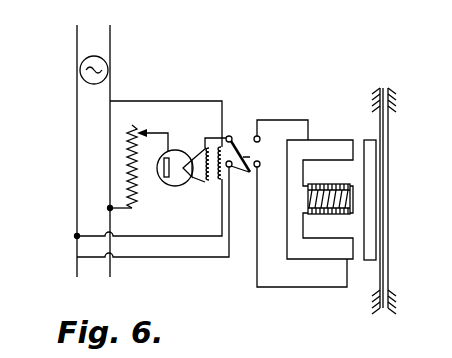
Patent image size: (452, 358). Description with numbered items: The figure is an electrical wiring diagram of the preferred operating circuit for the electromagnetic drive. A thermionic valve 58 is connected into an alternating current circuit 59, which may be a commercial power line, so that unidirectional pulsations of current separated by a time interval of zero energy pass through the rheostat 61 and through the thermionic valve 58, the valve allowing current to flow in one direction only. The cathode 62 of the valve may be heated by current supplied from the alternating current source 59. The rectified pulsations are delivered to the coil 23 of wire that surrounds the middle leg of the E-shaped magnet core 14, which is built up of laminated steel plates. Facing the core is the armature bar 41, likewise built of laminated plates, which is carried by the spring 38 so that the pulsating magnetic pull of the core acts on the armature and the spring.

The alternating current circuit 59 is at (110, 112).
The thermionic valve 58 is at (178, 151).
The cathode 62 is at (189, 179).
The rheostat 61 is at (139, 202).
The coil 23 is at (325, 186).
The magnet core 14 is at (315, 250).
The armature bar 41 is at (375, 151).
The spring 38 is at (388, 198).